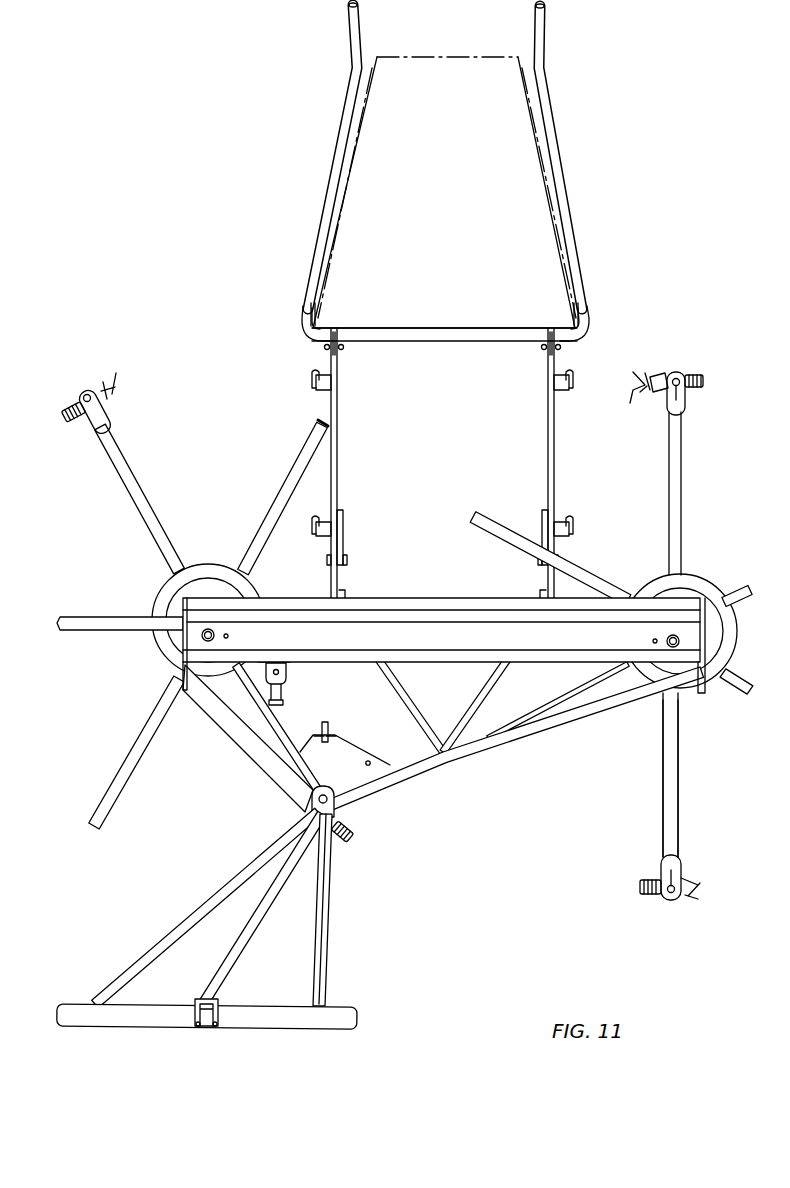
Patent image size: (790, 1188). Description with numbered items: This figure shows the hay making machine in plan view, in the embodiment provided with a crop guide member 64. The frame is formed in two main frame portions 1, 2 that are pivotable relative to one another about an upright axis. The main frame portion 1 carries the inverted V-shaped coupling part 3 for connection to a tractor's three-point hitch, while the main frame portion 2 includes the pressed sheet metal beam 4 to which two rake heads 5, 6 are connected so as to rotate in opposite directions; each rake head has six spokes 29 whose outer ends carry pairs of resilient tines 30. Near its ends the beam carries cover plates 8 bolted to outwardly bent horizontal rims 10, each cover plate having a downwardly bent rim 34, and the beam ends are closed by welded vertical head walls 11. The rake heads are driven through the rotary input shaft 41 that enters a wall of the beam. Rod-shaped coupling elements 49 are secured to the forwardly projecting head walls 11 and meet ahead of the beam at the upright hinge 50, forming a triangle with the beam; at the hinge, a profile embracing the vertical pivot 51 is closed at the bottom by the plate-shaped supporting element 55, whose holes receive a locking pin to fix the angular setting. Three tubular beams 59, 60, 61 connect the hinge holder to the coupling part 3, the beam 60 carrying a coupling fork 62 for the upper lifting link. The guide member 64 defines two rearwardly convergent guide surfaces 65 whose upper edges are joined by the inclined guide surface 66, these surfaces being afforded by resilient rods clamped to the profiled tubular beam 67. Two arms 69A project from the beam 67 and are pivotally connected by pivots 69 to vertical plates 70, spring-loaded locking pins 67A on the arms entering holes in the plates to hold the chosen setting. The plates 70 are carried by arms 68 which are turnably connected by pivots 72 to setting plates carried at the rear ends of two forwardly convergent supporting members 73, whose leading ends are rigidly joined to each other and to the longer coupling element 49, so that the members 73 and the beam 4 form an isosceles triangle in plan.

The main frame portion 1 is at (336, 981).
The main frame portion 2 is at (432, 772).
The coupling part 3 is at (153, 1006).
The beam 4 is at (452, 606).
The rake head 5 is at (118, 756).
The rake head 6 is at (688, 772).
The cover plate 8 is at (176, 590).
The horizontal rim 10 is at (418, 594).
The head wall 11 is at (166, 617).
The spoke 29 is at (290, 477).
The resilient tine 30 is at (702, 882).
The rim 34 is at (650, 587).
The input shaft 41 is at (280, 702).
The coupling element 49 is at (245, 728).
The hinge 50 is at (392, 824).
The pivot 51 is at (318, 800).
The supporting element 55 is at (350, 751).
The tubular beam 59 is at (317, 930).
The tubular beam 60 is at (222, 968).
The tubular beam 61 is at (205, 906).
The coupling fork 62 is at (220, 1004).
The guide member 64 is at (597, 237).
The guide surface 65 is at (357, 133).
The guide surface 66 is at (453, 34).
The profiled tubular beam 67 is at (302, 311).
The locking pin 67A is at (312, 378).
The arm 68 is at (338, 466).
The pivot 69 is at (327, 349).
The arm 69A is at (623, 379).
The vertical plate 70 is at (339, 366).
The pivot 72 is at (340, 560).
The supporting member 73 is at (396, 688).